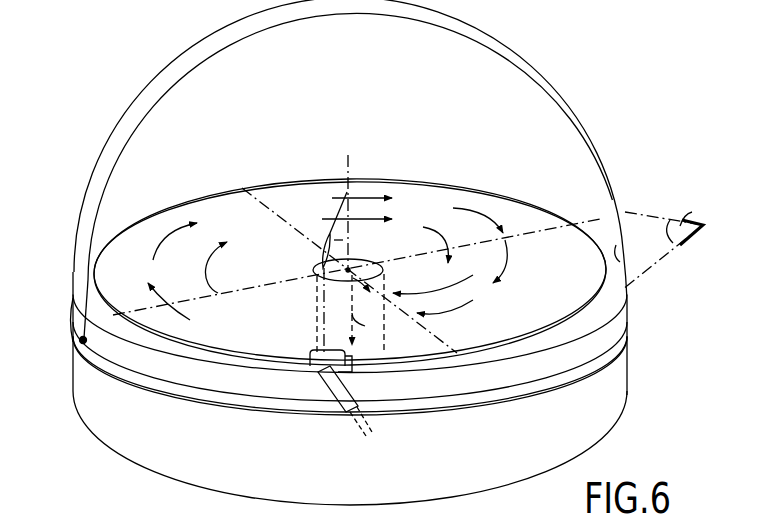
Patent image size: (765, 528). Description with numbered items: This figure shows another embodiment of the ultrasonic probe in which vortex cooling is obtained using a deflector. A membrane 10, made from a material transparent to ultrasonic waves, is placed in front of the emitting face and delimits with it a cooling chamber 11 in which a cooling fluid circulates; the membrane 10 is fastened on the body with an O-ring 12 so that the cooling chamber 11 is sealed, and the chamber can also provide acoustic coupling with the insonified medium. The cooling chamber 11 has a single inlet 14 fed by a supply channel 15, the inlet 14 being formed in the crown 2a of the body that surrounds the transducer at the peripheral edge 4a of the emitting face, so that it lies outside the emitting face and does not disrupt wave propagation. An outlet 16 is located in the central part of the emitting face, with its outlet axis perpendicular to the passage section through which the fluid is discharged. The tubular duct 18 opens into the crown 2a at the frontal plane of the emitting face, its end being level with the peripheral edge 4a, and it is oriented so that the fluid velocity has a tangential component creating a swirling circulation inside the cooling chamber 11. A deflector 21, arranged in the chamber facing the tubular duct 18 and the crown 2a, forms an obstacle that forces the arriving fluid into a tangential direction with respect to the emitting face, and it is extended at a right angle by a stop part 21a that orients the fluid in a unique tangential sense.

The membrane 10 is at (186, 62).
The cooling chamber 11 is at (292, 151).
The O-ring 12 is at (80, 348).
The inlet 14 is at (288, 368).
The supply channel 15 is at (372, 433).
The outlet 16 is at (357, 262).
The tubular duct 18 is at (328, 384).
The deflector 21 is at (312, 351).
The stop part 21a is at (345, 362).
The crown 2a is at (622, 253).
The peripheral edge 4a is at (527, 332).